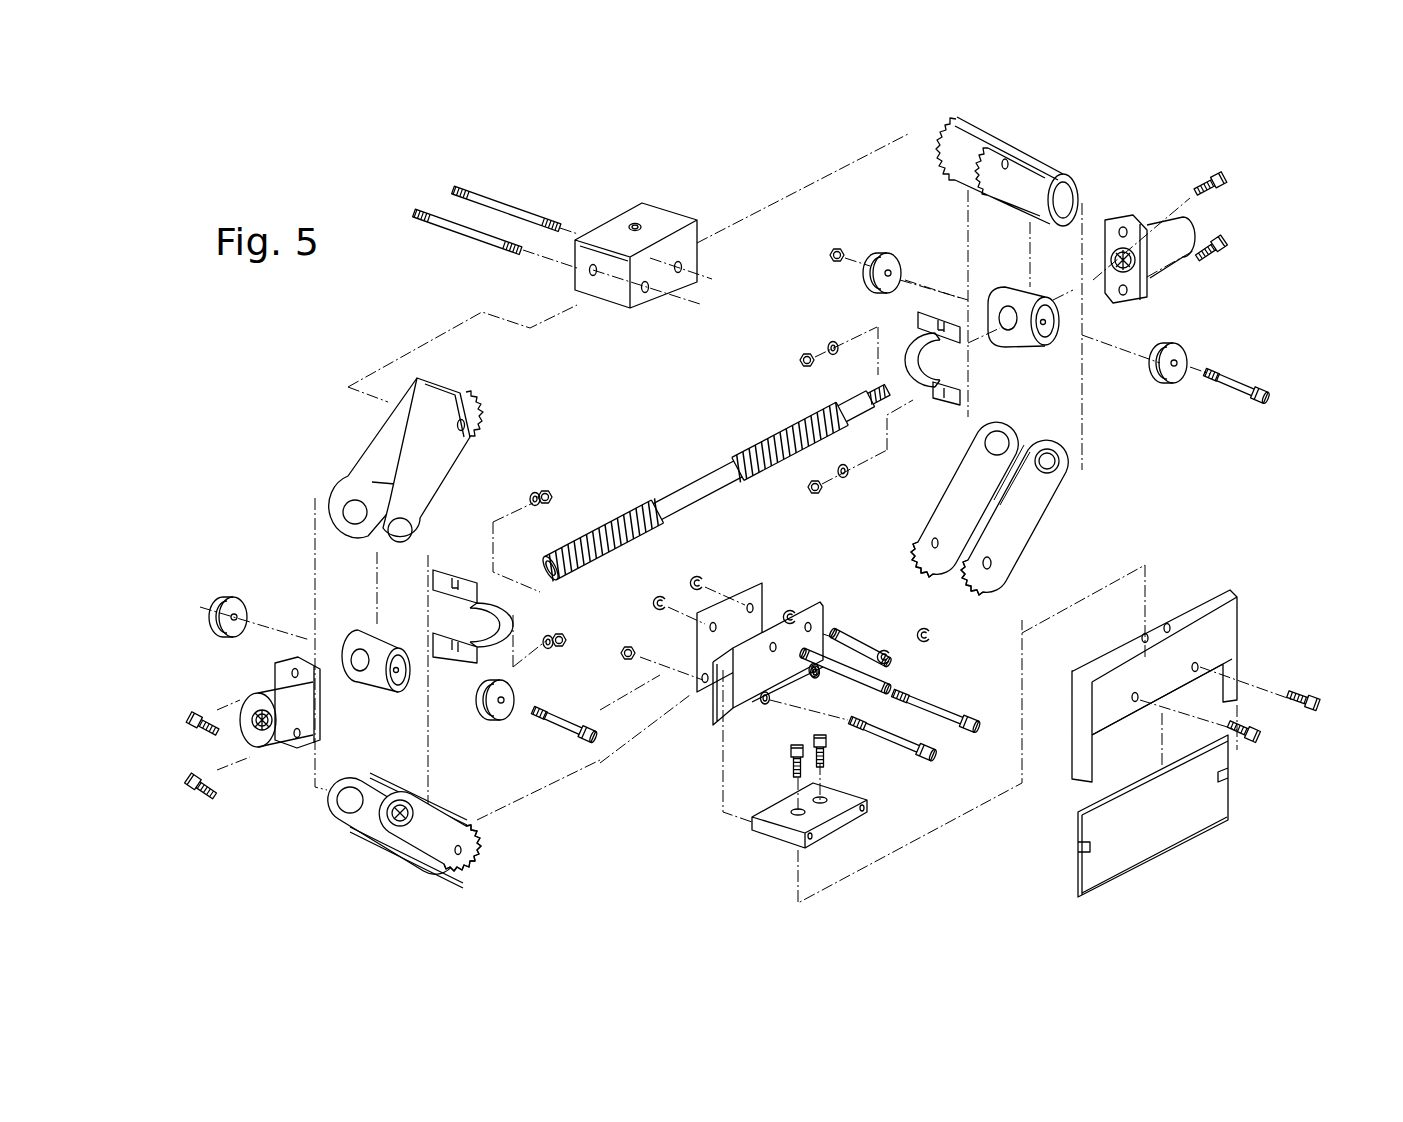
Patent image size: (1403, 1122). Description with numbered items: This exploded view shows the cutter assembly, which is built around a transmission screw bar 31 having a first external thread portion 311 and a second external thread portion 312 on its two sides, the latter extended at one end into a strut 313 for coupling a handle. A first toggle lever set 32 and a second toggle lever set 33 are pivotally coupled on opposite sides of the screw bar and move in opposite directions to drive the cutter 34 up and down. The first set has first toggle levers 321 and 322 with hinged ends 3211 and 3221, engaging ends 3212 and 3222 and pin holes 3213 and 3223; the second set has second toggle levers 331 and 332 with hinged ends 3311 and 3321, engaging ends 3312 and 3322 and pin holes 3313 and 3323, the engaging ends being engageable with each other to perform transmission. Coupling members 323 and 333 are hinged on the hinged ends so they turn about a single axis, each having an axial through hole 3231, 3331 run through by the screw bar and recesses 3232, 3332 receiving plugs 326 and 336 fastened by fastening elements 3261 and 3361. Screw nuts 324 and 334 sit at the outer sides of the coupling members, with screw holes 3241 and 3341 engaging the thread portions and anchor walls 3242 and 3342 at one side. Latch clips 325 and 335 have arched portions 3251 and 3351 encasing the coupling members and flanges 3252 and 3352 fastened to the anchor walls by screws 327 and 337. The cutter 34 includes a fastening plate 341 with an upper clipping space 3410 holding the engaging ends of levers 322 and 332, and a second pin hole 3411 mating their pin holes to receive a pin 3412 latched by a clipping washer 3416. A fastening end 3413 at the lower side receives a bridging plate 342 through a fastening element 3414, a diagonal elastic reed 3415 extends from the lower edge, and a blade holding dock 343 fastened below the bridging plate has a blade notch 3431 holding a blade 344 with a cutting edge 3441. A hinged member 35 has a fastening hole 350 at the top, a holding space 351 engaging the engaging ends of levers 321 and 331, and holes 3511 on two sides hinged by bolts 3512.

The transmission screw bar 31 is at (716, 474).
The first external thread portion 311 is at (602, 541).
The second external thread portion 312 is at (790, 441).
The strut 313 is at (879, 394).
The first toggle lever set 32 is at (315, 434).
The first toggle lever 321 is at (420, 460).
The hinged end 3211 is at (347, 487).
The engaging end 3212 is at (482, 403).
The pin hole 3213 is at (467, 425).
The first toggle lever 322 is at (434, 824).
The hinged end 3221 is at (400, 795).
The engaging end 3222 is at (480, 853).
The pin hole 3223 is at (463, 867).
The coupling member 323 is at (377, 662).
The axial through hole 3231 is at (363, 670).
The recess 3232 is at (390, 673).
The screw nut 324 is at (235, 732).
The screw hole 3241 is at (247, 727).
The anchor wall 3242 is at (293, 653).
The latch clip 325 is at (511, 577).
The arched portion 3251 is at (497, 590).
The flange 3252 is at (447, 577).
The plug 326 is at (230, 593).
The fastening element 3261 is at (583, 720).
The screw 327 is at (210, 713).
The second toggle lever set 33 is at (1162, 165).
The second toggle lever 331 is at (1002, 169).
The hinged end 3311 is at (1080, 192).
The engaging end 3312 is at (933, 158).
The pin hole 3313 is at (1010, 167).
The second toggle lever 332 is at (1013, 495).
The hinged end 3321 is at (1047, 449).
The engaging end 3322 is at (987, 588).
The pin hole 3323 is at (993, 563).
The coupling member 333 is at (1025, 314).
The axial through hole 3331 is at (1010, 327).
The recess 3332 is at (1042, 330).
The screw nut 334 is at (1192, 267).
The screw hole 3341 is at (1130, 263).
The anchor wall 3342 is at (1140, 297).
The latch clip 335 is at (873, 378).
The arched portion 3351 is at (868, 474).
The flange 3352 is at (920, 320).
The plug 336 is at (888, 250).
The fastening element 3361 is at (1233, 382).
The screw 337 is at (1227, 183).
The cutter 34 is at (1272, 648).
The fastening plate 341 is at (763, 675).
The clipping space 3410 is at (773, 603).
The second pin hole 3411 is at (813, 627).
The pin 3412 is at (873, 647).
The fastening end 3413 is at (763, 690).
The fastening element 3414 is at (927, 740).
The diagonal elastic reed 3415 is at (723, 707).
The clipping washer 3416 is at (928, 633).
The bridging plate 342 is at (840, 807).
The blade holding dock 343 is at (1196, 651).
The blade notch 3431 is at (1133, 720).
The blade 344 is at (1196, 816).
The cutting edge 3441 is at (1197, 827).
The hinged member 35 is at (654, 267).
The fastening hole 350 is at (637, 228).
The holding space 351 is at (613, 293).
The hole 3511 is at (650, 287).
The bolt 3512 is at (462, 228).